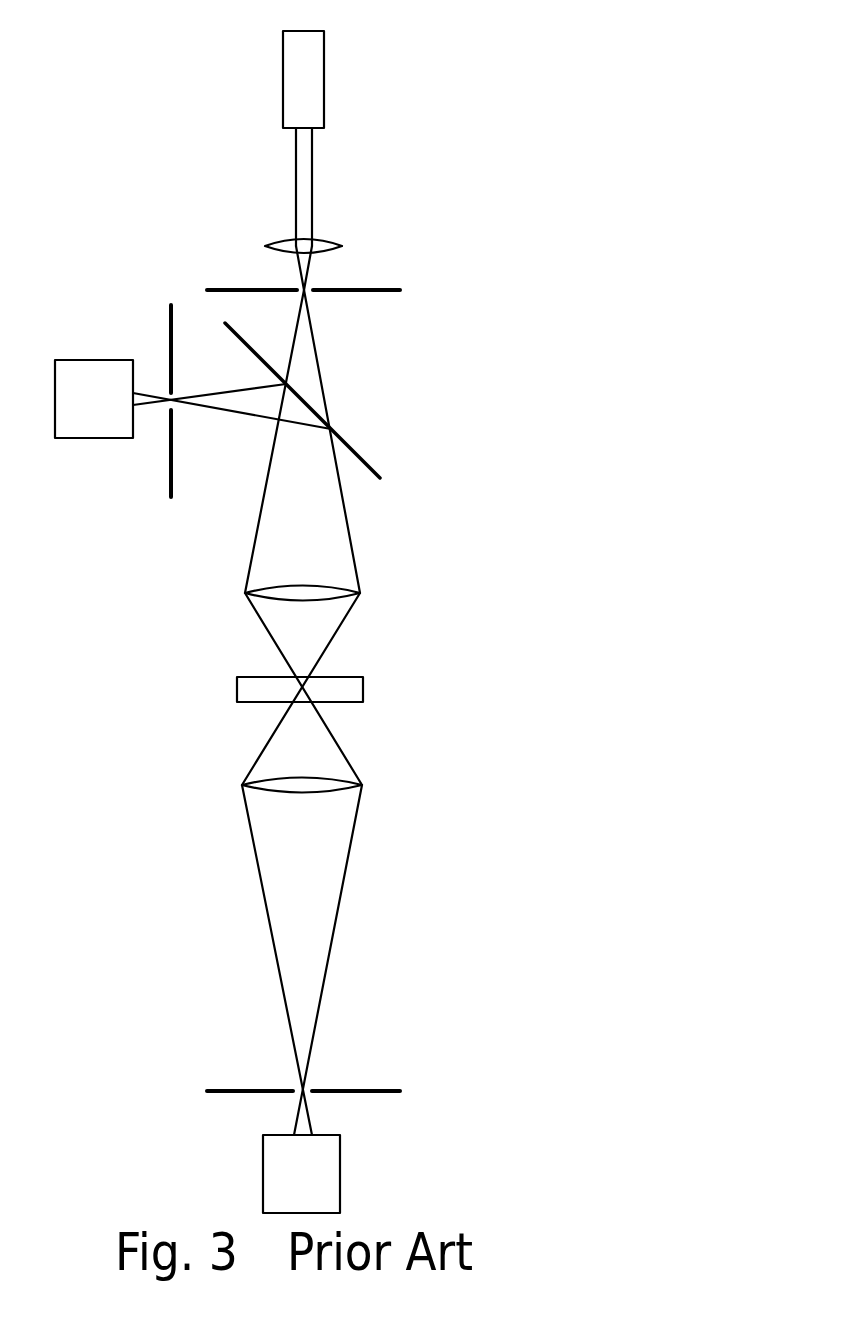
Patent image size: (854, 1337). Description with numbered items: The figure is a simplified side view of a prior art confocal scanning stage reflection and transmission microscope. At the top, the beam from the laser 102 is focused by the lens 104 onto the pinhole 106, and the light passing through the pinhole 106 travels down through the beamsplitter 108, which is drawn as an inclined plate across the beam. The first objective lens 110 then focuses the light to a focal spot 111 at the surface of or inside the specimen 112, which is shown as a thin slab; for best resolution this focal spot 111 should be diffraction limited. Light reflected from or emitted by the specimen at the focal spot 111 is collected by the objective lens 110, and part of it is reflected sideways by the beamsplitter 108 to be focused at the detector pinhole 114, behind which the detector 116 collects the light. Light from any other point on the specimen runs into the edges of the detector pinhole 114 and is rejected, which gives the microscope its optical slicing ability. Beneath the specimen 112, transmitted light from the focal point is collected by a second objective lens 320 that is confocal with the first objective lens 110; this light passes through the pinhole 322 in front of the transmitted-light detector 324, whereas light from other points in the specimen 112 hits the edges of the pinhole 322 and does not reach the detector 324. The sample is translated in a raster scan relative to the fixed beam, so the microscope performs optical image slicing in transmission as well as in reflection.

The laser 102 is at (324, 51).
The lens 104 is at (342, 246).
The pinhole 106 is at (400, 290).
The beamsplitter 108 is at (367, 462).
The objective lens 110 is at (360, 593).
The focal spot 111 is at (303, 688).
The specimen 112 is at (363, 678).
The detector pinhole 114 is at (173, 303).
The detector 116 is at (73, 438).
The second objective lens 320 is at (362, 785).
The pinhole 322 is at (400, 1091).
The transmitted-light detector 324 is at (340, 1175).